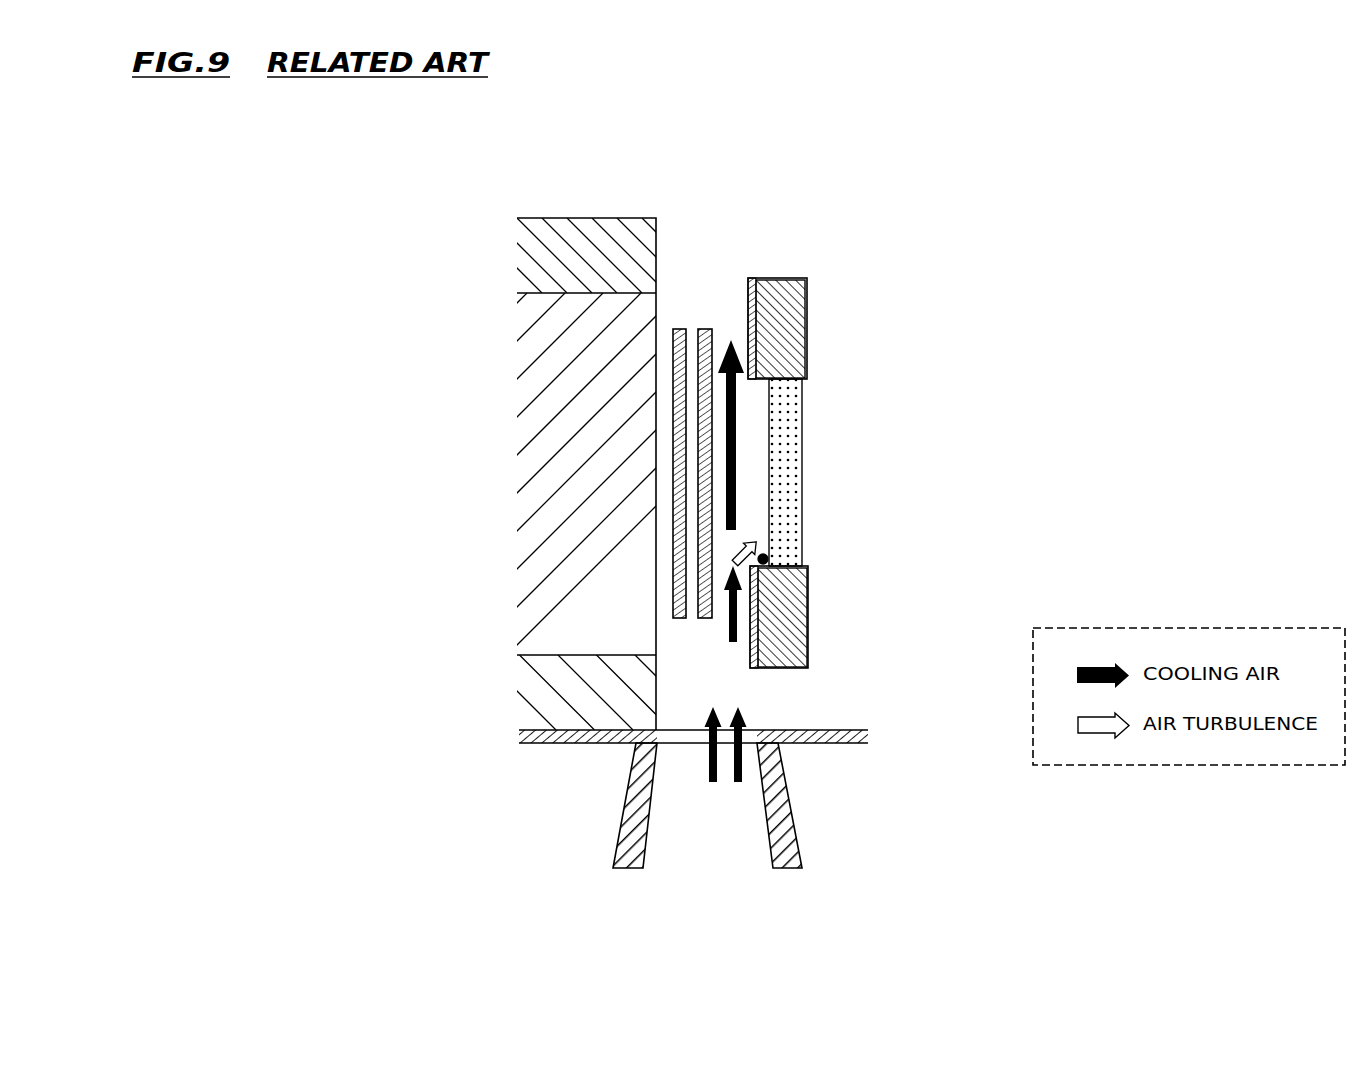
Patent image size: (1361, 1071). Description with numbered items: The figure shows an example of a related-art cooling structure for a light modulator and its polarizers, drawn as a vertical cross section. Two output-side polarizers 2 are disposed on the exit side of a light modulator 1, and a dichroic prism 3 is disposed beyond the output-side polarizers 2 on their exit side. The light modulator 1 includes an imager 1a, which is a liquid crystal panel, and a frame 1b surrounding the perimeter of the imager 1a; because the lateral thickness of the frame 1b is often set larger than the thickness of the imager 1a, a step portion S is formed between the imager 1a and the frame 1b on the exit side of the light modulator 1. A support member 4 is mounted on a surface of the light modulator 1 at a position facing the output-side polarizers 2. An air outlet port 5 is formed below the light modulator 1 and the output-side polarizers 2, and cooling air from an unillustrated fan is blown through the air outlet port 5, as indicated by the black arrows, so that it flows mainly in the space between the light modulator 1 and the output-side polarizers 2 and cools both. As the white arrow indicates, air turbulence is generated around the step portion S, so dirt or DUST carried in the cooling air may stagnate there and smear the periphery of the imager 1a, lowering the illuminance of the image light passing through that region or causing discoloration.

The light modulator 1 is at (823, 398).
The imager 1a is at (803, 432).
The frame 1b is at (807, 342).
The output-side polarizers 2 is at (683, 328).
The dichroic prism 3 is at (531, 395).
The support member 4 is at (758, 616).
The air outlet port 5 is at (785, 826).
The step portion S is at (762, 577).
The dust DUST is at (768, 555).